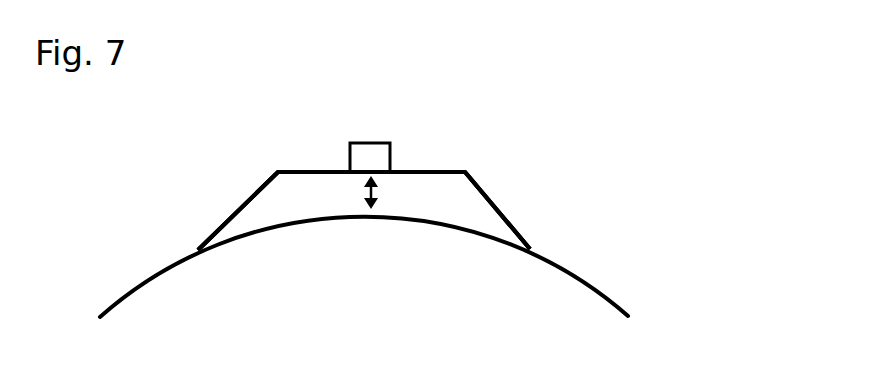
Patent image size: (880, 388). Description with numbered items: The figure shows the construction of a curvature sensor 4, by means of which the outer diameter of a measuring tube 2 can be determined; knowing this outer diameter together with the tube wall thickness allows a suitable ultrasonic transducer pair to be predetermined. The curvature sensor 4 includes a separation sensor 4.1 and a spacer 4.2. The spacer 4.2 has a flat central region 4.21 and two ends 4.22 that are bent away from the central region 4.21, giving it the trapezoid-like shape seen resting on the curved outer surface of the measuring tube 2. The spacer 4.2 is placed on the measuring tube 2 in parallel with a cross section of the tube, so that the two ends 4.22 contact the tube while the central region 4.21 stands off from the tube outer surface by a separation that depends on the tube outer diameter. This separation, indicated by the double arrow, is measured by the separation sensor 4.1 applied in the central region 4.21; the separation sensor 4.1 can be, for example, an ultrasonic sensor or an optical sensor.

The measuring tube 2 is at (603, 287).
The curvature sensor 4 is at (488, 145).
The separation sensor 4.1 is at (377, 130).
The spacer 4.2 is at (487, 182).
The central region 4.21 is at (307, 170).
The ends 4.22 is at (223, 223).